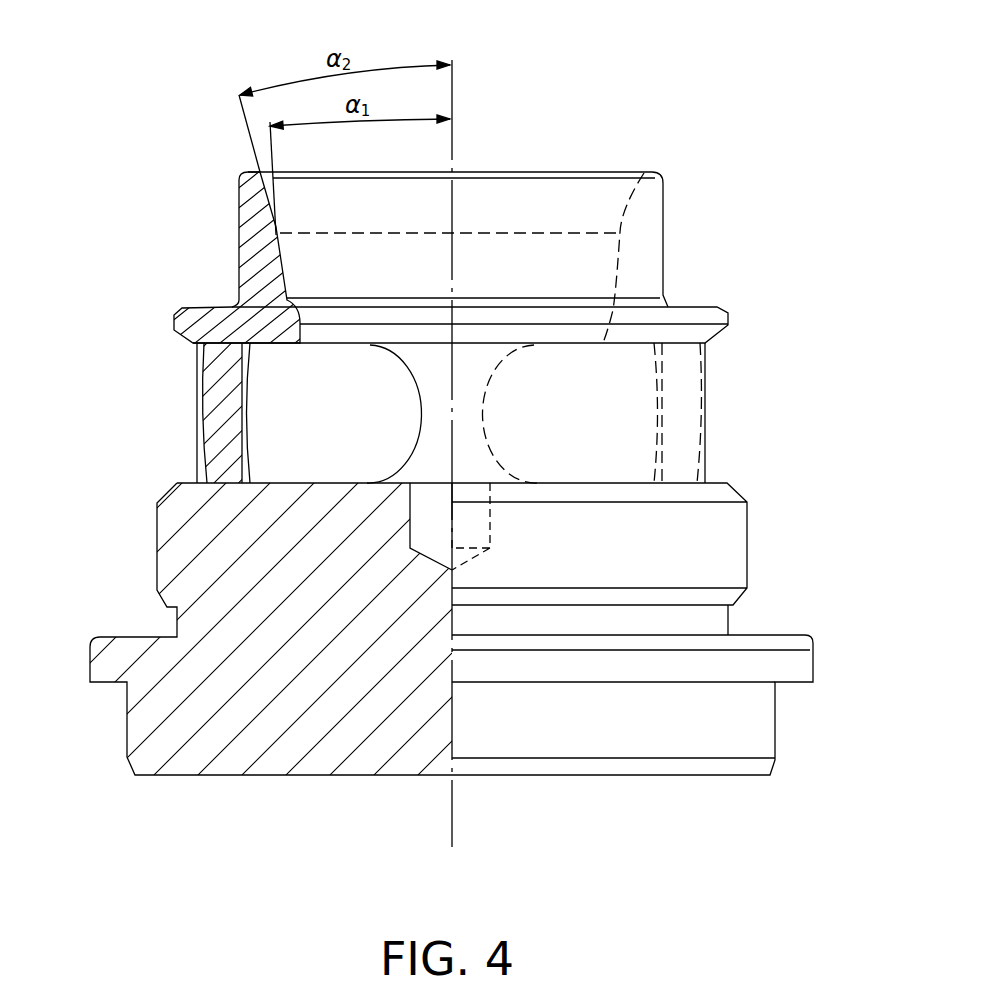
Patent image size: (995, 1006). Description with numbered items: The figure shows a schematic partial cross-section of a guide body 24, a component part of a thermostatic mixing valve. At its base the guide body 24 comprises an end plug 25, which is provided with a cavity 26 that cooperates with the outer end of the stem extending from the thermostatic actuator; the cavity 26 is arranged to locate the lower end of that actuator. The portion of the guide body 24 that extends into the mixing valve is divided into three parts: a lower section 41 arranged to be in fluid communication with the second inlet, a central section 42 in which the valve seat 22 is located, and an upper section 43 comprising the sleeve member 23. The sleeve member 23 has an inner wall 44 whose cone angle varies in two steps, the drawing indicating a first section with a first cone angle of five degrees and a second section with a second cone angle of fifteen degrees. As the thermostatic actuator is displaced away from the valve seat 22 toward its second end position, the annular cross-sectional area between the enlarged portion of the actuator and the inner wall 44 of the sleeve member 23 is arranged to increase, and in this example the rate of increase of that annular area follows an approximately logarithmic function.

The valve seat 22 is at (340, 328).
The sleeve member 23 is at (255, 258).
The guide body 24 is at (728, 97).
The end plug 25 is at (290, 744).
The cavity 26 is at (432, 527).
The lower section 41 is at (145, 395).
The central section 42 is at (145, 313).
The upper section 43 is at (168, 180).
The inner wall 44 is at (607, 213).